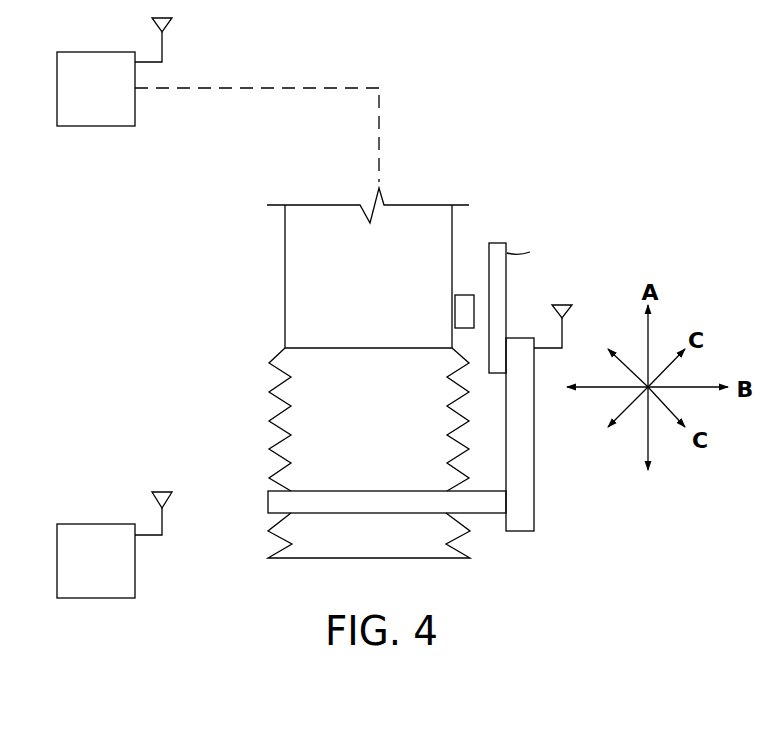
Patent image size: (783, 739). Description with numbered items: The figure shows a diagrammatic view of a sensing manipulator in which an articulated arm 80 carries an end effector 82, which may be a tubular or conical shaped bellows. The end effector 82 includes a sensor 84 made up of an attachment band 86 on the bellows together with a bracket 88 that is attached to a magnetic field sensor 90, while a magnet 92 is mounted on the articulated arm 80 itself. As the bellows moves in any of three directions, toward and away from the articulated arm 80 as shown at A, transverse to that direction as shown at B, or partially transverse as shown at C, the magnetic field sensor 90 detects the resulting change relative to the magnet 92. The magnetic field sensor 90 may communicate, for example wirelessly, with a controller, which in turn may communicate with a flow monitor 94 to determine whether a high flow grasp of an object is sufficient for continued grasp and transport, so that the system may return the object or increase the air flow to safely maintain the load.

The articulated arm 80 is at (285, 284).
The end effector 82 is at (269, 392).
The sensor 84 is at (586, 175).
The attachment band 86 is at (268, 500).
The bracket 88 is at (535, 497).
The magnetic field sensor 90 is at (110, 573).
The magnet 92 is at (455, 307).
The flow monitor 94 is at (110, 101).